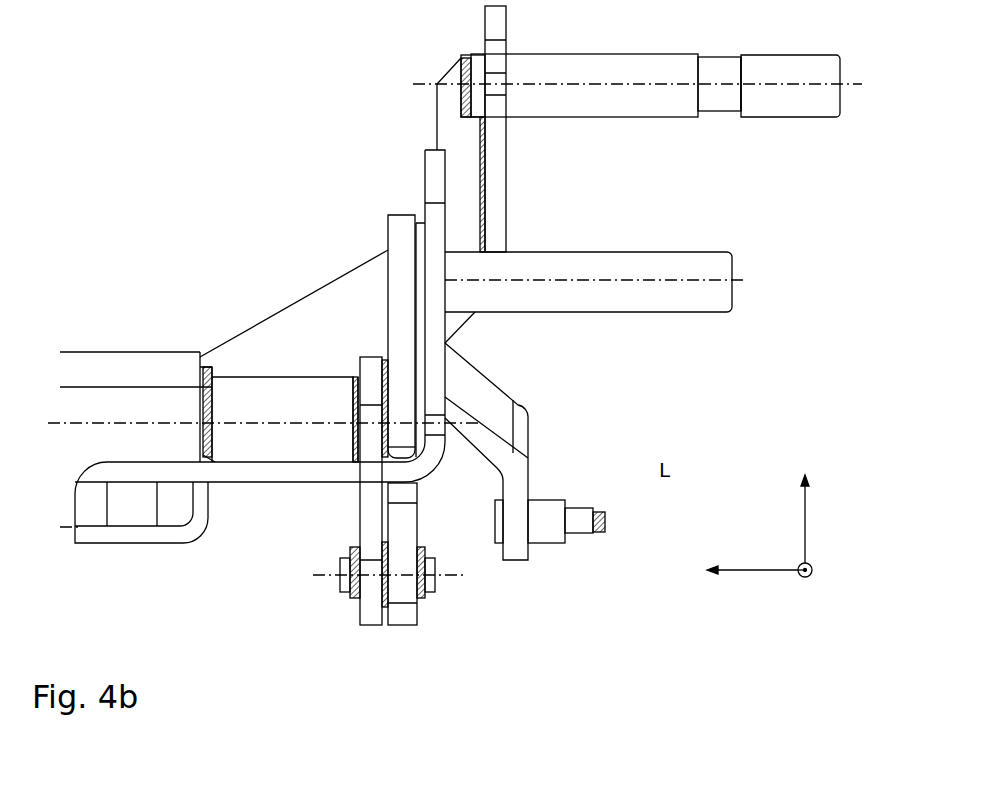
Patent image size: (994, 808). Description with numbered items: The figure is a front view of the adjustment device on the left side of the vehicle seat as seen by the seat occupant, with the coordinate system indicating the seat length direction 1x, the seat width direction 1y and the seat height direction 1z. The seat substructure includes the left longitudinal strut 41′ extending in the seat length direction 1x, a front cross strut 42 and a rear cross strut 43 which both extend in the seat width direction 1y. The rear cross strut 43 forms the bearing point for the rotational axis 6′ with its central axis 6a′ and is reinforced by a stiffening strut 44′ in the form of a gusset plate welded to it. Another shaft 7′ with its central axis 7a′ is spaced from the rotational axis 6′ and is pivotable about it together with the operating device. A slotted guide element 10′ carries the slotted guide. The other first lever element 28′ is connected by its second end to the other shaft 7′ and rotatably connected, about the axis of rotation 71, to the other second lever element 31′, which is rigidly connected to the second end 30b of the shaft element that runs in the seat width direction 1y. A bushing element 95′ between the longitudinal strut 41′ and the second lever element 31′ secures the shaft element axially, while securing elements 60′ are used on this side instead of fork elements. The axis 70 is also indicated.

The rotational axis 6′ is at (763, 65).
The central axis 6a′ is at (780, 87).
The shaft 7′ is at (684, 312).
The central axis 7a′ is at (607, 290).
The slotted guide element 10′ is at (433, 170).
The first lever element 28′ is at (400, 617).
The second end of the shaft element 30b is at (268, 455).
The second lever element 31′ is at (370, 617).
The longitudinal strut 41′ is at (122, 535).
The front cross strut 42 is at (77, 398).
The rear cross strut 43 is at (497, 177).
The stiffening strut 44′ is at (453, 140).
The securing element 60′ is at (358, 550).
The axis 70 is at (300, 422).
The axis of rotation 71 is at (452, 578).
The bushing element 95′ is at (228, 398).
The seat length direction 1x is at (802, 578).
The seat width direction 1y is at (730, 575).
The seat height direction 1z is at (806, 532).